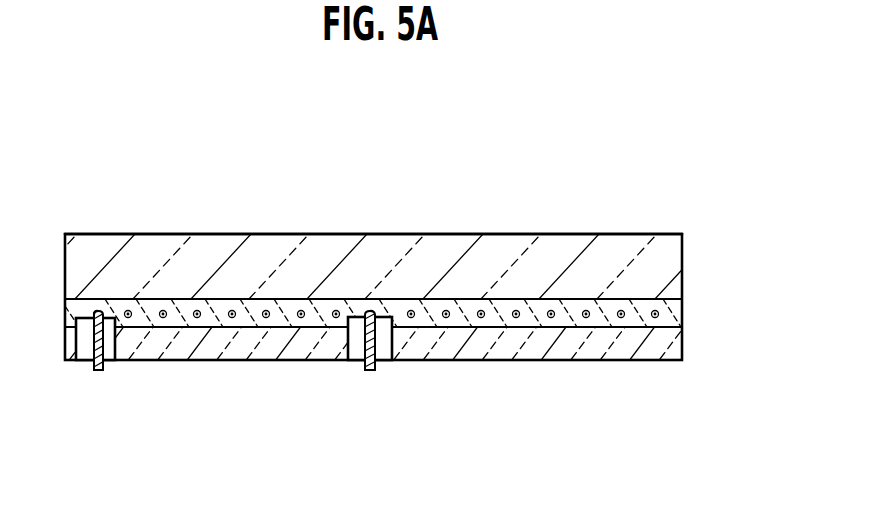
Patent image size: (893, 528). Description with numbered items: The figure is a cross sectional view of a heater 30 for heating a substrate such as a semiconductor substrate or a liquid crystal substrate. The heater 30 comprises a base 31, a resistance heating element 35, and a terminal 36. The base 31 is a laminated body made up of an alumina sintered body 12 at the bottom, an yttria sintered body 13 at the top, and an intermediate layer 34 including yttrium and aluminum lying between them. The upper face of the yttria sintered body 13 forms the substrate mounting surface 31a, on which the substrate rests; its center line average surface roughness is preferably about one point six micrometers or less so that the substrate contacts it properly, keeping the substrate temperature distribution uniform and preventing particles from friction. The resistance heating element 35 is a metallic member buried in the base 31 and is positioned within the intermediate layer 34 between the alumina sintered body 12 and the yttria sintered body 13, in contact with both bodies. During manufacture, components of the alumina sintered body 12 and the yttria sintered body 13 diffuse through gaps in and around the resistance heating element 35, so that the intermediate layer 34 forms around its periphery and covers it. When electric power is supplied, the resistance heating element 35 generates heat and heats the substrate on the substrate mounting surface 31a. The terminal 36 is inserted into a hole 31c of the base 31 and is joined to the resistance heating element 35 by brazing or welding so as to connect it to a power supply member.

The heater 30 is at (593, 192).
The base 31 is at (769, 248).
The substrate mounting surface 31a is at (467, 234).
The hole 31c is at (110, 362).
The yttria sintered body 13 is at (677, 266).
The intermediate layer 34 is at (678, 307).
The resistance heating element 35 is at (220, 317).
The alumina sintered body 12 is at (678, 344).
The terminal 36 is at (96, 369).